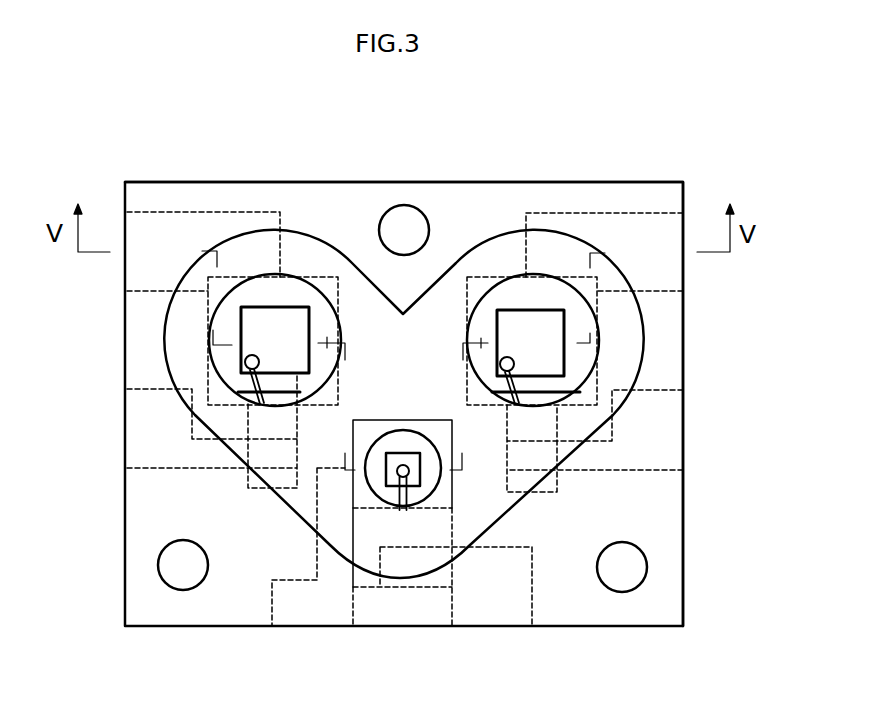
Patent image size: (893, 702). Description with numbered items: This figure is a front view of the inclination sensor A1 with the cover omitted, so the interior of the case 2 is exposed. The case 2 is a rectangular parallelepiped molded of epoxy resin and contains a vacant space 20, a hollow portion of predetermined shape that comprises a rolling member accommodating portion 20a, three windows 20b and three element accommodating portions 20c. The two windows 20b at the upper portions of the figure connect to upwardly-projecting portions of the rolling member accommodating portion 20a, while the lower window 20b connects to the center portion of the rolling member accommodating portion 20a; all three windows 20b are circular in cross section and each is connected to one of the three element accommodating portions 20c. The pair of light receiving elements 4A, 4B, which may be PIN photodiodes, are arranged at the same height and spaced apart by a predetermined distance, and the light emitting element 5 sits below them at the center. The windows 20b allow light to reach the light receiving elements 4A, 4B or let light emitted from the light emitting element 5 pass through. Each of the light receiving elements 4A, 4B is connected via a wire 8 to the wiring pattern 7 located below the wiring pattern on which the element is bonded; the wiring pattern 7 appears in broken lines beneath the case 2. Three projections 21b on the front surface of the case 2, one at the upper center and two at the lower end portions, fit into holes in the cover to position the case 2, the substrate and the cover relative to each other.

The inclination sensor A1 is at (176, 160).
The case 2 is at (640, 192).
The light receiving element 4A is at (265, 315).
The light receiving element 4B is at (538, 318).
The light emitting element 5 is at (393, 493).
The wiring pattern 7 is at (132, 270).
The wire 8 is at (257, 376).
The space 20 is at (406, 454).
The rolling member accommodating portion 20a is at (525, 500).
The window 20b is at (213, 309).
The element accommodating portion 20c is at (208, 384).
The projection 21b is at (415, 218).